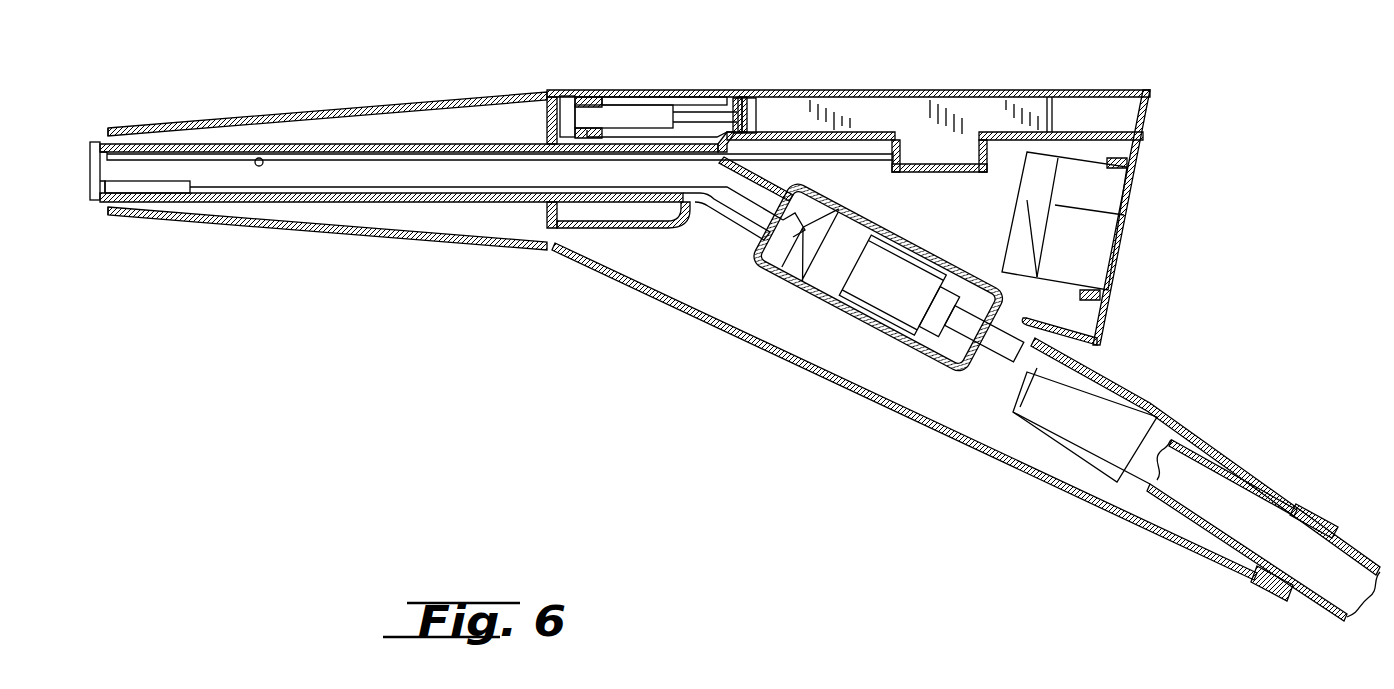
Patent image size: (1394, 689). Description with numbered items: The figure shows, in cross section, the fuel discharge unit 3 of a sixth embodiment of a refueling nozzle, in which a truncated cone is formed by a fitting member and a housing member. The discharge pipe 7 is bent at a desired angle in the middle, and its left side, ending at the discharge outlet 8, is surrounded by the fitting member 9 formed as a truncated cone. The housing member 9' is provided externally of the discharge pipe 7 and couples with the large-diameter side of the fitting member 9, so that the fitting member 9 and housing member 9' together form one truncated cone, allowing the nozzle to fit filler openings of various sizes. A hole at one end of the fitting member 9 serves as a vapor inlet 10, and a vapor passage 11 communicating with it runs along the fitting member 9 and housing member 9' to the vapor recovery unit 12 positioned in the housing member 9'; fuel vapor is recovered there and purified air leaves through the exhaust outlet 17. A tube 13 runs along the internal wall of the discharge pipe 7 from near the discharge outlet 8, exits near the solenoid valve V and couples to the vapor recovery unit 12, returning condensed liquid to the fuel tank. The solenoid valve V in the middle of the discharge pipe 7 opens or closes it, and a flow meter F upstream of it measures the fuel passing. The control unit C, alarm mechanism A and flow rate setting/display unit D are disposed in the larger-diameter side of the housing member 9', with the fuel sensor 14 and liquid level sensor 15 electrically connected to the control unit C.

The fuel discharge unit 3 is at (558, 350).
The discharge pipe 7 is at (473, 143).
The discharge outlet 8 is at (90, 178).
The fitting member 9 is at (327, 265).
The housing member 9' is at (922, 422).
The vapor inlet 10 is at (108, 135).
The vapor passage 11 is at (383, 118).
The vapor recovery unit 12 is at (880, 110).
The tube 13 is at (253, 158).
The fuel sensor 14 is at (622, 120).
The liquid level sensor 15 is at (158, 187).
The exhaust outlet 17 is at (1143, 112).
The alarm mechanism A is at (1123, 190).
The control unit C is at (1027, 245).
The flow rate setting/display unit D is at (1108, 235).
The flow meter F is at (1077, 430).
The solenoid valve V is at (853, 313).